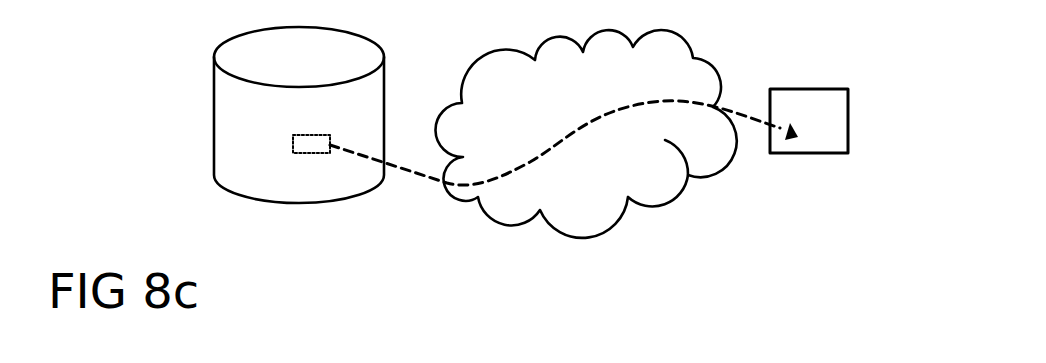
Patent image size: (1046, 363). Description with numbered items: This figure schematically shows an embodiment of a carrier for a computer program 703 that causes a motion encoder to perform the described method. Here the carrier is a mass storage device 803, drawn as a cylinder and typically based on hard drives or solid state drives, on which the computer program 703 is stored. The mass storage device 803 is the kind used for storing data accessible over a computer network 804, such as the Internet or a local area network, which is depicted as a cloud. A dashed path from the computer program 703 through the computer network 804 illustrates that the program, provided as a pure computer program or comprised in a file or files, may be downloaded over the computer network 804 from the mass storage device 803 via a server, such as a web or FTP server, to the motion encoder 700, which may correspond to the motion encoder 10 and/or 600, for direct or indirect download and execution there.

The mass storage device 803 is at (214, 106).
The computer program 703 is at (303, 155).
The computer network 804 is at (517, 225).
The motion encoder 10 is at (825, 152).
The motion encoder 600 is at (825, 152).
The motion encoder 700 is at (790, 155).